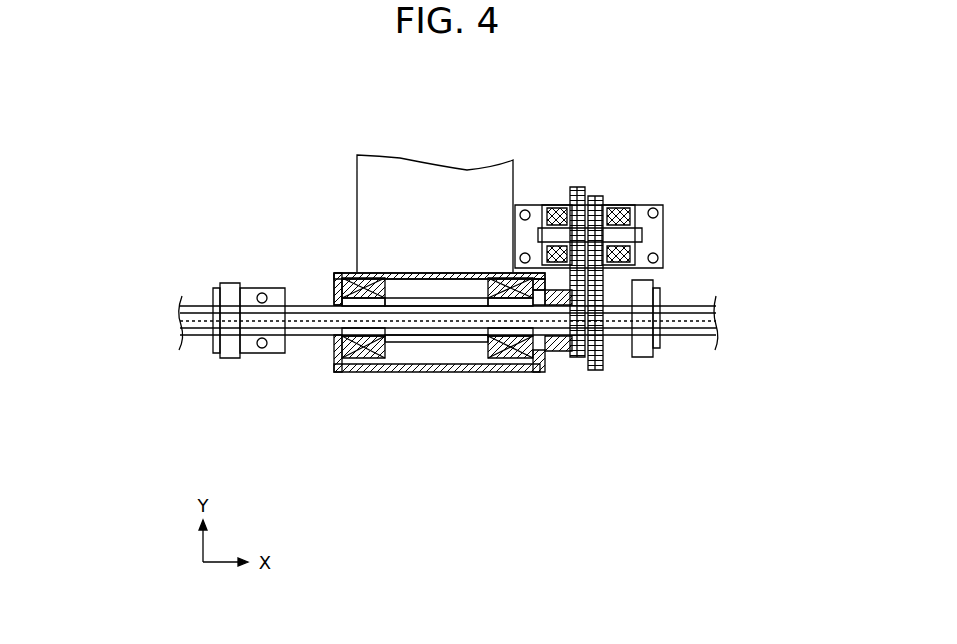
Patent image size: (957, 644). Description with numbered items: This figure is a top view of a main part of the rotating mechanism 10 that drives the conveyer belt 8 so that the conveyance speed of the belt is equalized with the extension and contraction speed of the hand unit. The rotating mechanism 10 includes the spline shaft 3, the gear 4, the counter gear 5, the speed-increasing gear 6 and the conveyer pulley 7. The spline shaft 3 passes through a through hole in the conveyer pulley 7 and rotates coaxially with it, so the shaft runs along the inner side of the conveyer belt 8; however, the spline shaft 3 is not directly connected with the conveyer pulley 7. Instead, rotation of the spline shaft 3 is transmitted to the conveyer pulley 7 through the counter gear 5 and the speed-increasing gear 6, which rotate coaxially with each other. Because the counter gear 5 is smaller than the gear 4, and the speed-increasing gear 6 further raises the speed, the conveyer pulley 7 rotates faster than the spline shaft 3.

The spline shaft 3 is at (195, 323).
The gear 4 is at (592, 371).
The counter gear 5 is at (596, 196).
The speed-increasing gear 6 is at (577, 186).
The conveyer pulley 7 is at (472, 371).
The conveyer belt 8 is at (372, 229).
The rotating mechanism 10 is at (592, 97).